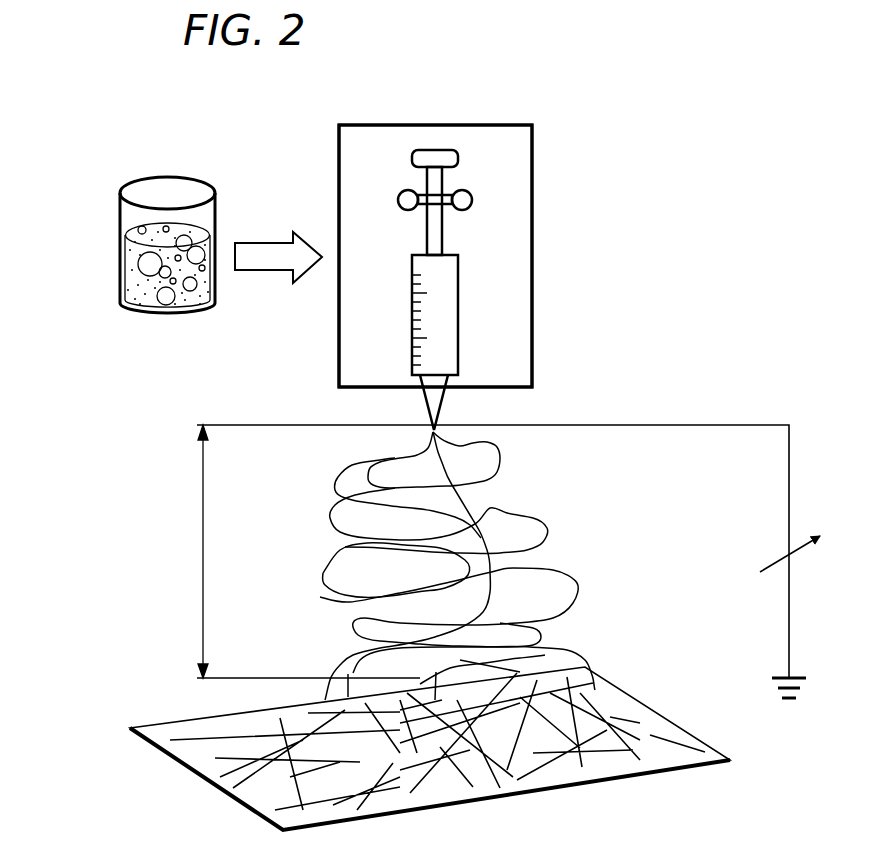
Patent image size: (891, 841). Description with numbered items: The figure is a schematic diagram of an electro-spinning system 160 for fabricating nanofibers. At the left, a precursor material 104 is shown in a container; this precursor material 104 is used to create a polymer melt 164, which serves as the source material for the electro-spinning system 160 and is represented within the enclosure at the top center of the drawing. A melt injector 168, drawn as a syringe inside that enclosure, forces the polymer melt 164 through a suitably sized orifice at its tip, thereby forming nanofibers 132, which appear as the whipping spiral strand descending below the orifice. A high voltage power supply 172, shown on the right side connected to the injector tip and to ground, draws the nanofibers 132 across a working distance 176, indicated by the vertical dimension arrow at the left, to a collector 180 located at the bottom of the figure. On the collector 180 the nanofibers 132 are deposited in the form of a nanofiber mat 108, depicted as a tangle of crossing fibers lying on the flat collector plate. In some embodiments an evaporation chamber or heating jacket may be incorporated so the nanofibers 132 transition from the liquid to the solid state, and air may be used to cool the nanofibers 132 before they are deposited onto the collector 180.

The electro-spinning system 160 is at (556, 88).
The polymer melt 164 is at (517, 178).
The melt injector 168 is at (458, 346).
The precursor material 104 is at (128, 271).
The working distance 176 is at (203, 545).
The high voltage power supply 172 is at (790, 560).
The nanofibers 132 is at (580, 590).
The nanofiber mat 108 is at (603, 786).
The collector 180 is at (195, 757).